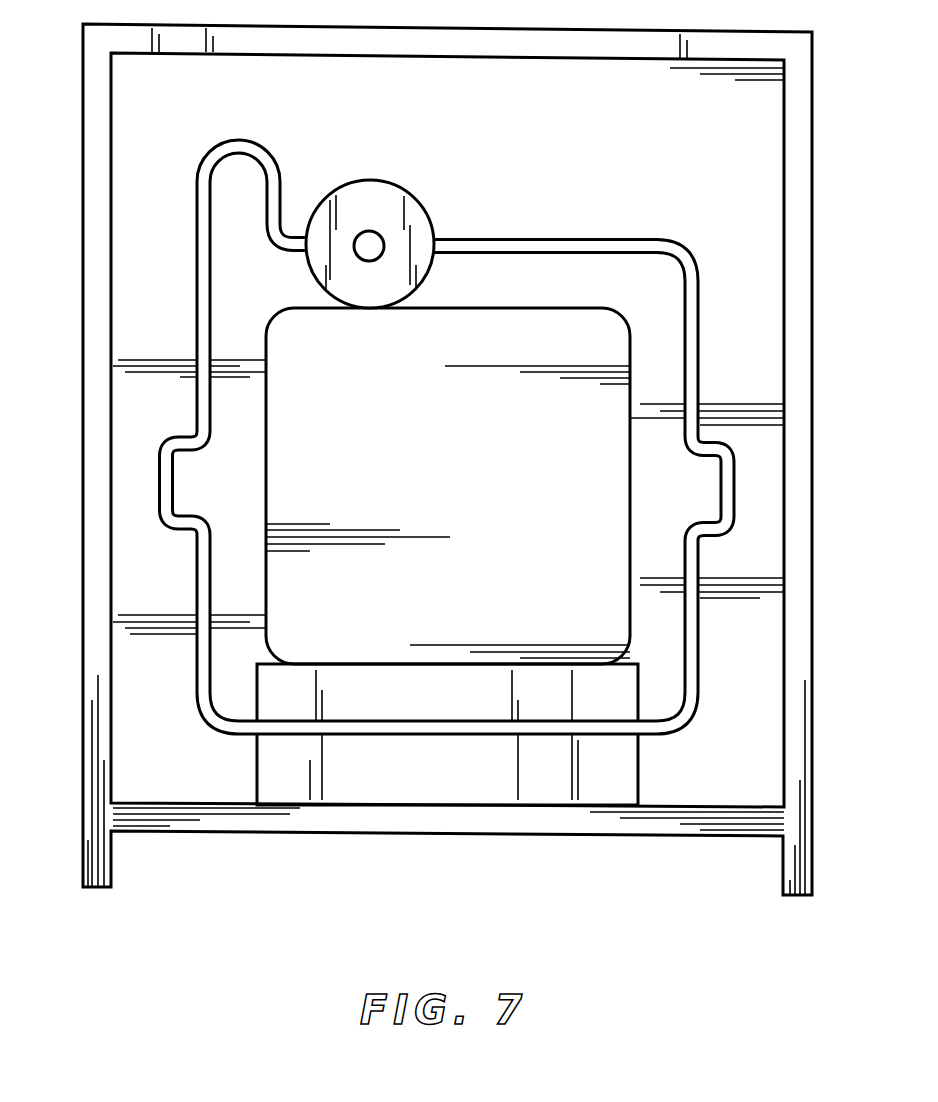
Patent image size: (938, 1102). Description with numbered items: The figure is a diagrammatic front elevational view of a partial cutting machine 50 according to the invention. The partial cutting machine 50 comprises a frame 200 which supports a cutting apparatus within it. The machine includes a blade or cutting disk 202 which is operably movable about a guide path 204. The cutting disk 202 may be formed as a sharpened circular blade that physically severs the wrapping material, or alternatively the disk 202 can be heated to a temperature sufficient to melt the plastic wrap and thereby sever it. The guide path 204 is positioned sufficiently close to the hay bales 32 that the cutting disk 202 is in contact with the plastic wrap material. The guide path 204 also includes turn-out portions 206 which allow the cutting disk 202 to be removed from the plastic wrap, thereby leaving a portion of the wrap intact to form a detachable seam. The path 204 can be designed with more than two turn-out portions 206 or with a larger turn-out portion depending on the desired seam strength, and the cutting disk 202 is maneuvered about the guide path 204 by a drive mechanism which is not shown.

The partial cutting machine 50 is at (675, 889).
The hay bales 32 is at (458, 480).
The frame 200 is at (797, 307).
The cutting disk 202 is at (368, 207).
The guide path 204 is at (687, 262).
The turn-out portions 206 is at (167, 492).